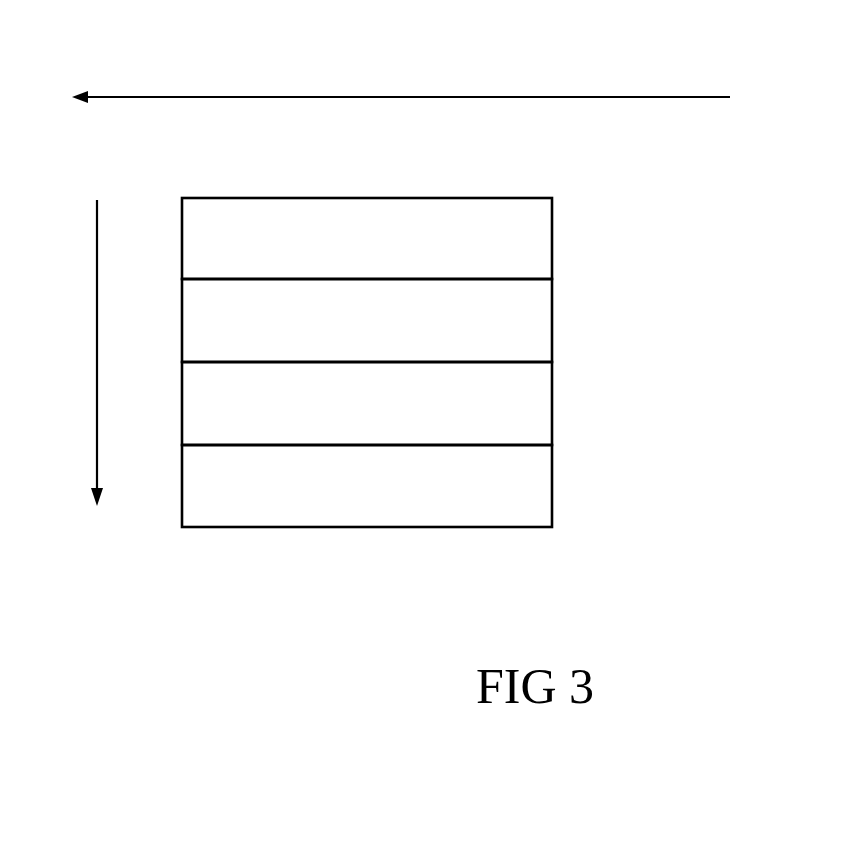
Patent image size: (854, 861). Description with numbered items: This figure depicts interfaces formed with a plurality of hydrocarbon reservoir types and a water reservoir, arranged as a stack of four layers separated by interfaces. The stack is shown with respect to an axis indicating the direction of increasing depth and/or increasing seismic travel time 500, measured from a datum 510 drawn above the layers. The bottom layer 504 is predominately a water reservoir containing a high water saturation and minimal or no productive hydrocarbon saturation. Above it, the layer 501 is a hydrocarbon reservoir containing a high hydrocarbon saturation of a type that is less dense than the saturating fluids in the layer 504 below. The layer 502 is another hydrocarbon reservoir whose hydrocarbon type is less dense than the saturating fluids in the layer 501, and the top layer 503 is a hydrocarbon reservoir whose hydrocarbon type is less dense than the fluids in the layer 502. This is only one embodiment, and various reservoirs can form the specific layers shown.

The axis of increasing depth and/or increasing seismic travel time 500 is at (97, 247).
The datum 510 is at (612, 95).
The hydrocarbon reservoir layer 501 is at (525, 402).
The hydrocarbon reservoir layer 502 is at (525, 320).
The top hydrocarbon reservoir layer 503 is at (525, 237).
The bottom water reservoir layer 504 is at (525, 483).